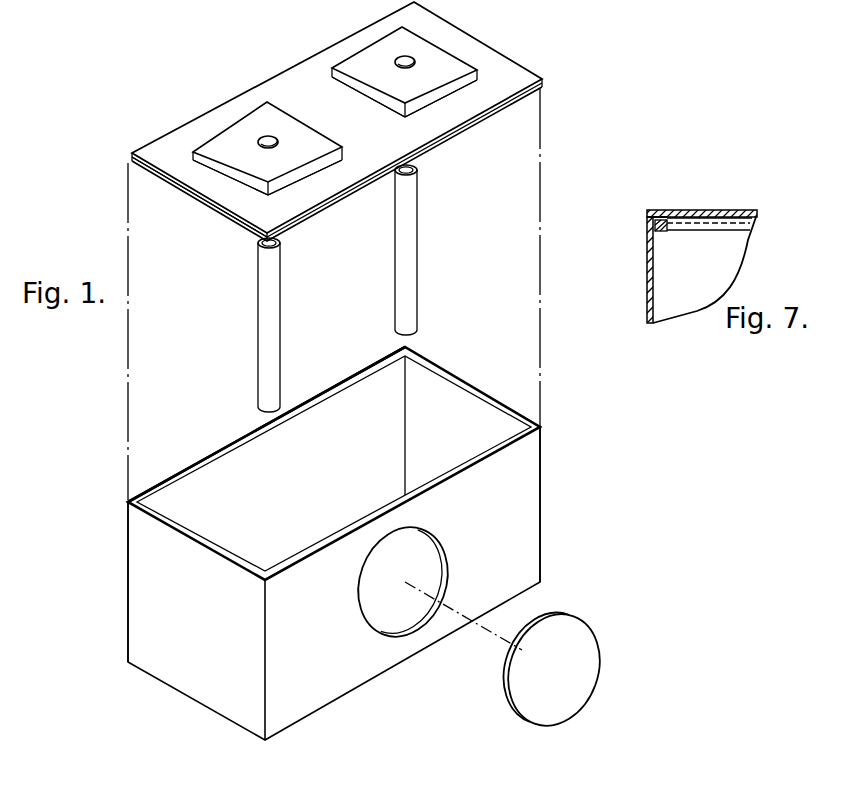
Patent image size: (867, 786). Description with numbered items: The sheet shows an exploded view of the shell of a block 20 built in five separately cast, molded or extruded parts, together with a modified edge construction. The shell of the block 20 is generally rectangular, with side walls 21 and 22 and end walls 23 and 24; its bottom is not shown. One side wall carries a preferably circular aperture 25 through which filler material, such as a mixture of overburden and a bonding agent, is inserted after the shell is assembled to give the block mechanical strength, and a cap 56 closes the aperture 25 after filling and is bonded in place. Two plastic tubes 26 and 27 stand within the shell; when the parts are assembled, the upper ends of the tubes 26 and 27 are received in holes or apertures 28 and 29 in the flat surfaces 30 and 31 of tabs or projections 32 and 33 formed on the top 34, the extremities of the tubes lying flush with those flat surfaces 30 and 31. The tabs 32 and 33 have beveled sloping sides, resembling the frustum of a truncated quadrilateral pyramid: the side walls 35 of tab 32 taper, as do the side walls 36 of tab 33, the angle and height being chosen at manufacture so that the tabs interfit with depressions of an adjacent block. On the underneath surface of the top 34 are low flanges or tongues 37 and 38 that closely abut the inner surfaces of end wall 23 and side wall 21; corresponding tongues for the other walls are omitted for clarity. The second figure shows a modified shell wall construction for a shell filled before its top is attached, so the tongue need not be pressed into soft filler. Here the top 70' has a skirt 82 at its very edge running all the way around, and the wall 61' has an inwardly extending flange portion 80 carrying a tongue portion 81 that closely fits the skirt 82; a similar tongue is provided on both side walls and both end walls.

In FIG. 1, the shell of a block 20 is at (133, 548).
In FIG. 1, the side wall 21 is at (535, 475).
In FIG. 1, the side wall 22 is at (205, 468).
In FIG. 1, the end wall 23 is at (135, 618).
In FIG. 1, the end wall 24 is at (460, 390).
In FIG. 1, the aperture 25 is at (440, 585).
In FIG. 1, the plastic tube 26 is at (273, 298).
In FIG. 1, the plastic tube 27 is at (411, 265).
In FIG. 1, the aperture 28 is at (276, 124).
In FIG. 1, the aperture 29 is at (417, 50).
In FIG. 1, the flat surface 30 is at (222, 135).
In FIG. 1, the flat surface 31 is at (434, 56).
In FIG. 1, the tab or projection 32 is at (233, 167).
In FIG. 1, the tab or projection 33 is at (453, 85).
In FIG. 1, the top 34 is at (322, 50).
In FIG. 1, the side walls of tab 35 is at (260, 183).
In FIG. 1, the side walls of tab 36 is at (385, 102).
In FIG. 1, the flange or tongue 37 is at (182, 192).
In FIG. 1, the flange or tongue 38 is at (483, 118).
In FIG. 1, the cap 56 is at (592, 652).
In FIG. 7, the top 70' is at (702, 202).
In FIG. 7, the inwardly extending flange portion 80 is at (652, 228).
In FIG. 7, the tongue portion 81 is at (666, 226).
In FIG. 7, the skirt 82 is at (646, 215).
In FIG. 7, the wall 61' is at (689, 273).